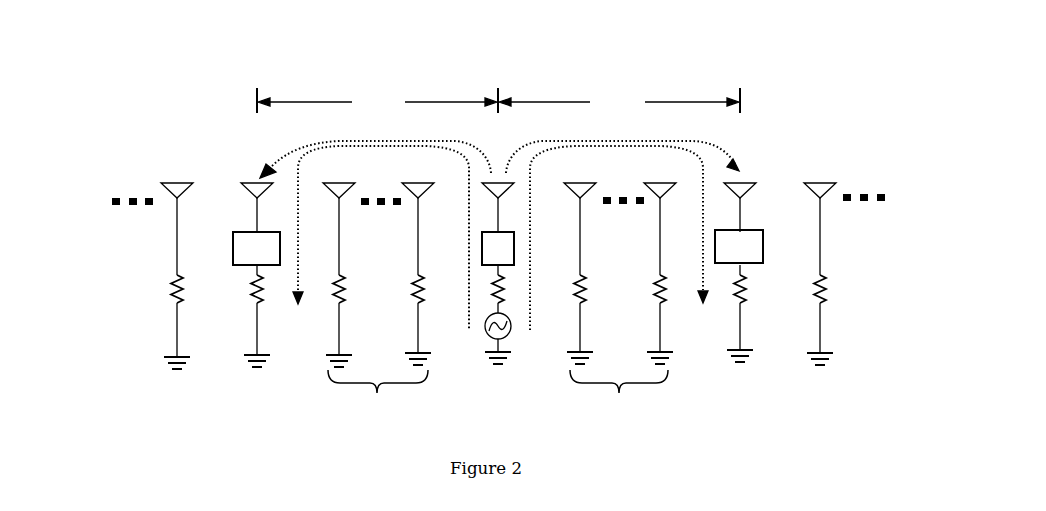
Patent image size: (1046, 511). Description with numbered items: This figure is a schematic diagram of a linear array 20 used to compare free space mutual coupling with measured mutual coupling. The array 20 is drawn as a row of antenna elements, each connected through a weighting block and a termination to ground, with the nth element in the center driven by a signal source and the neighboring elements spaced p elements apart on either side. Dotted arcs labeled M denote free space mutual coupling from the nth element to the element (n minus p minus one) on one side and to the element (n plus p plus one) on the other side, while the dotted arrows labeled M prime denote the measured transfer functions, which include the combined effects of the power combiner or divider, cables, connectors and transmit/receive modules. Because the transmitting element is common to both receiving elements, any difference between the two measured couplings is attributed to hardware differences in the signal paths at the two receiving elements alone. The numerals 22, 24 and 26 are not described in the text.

The linear array 20 is at (803, 132).
The antenna element 22 is at (503, 207).
The weighting element 24 is at (504, 253).
The signal source 26 is at (503, 327).